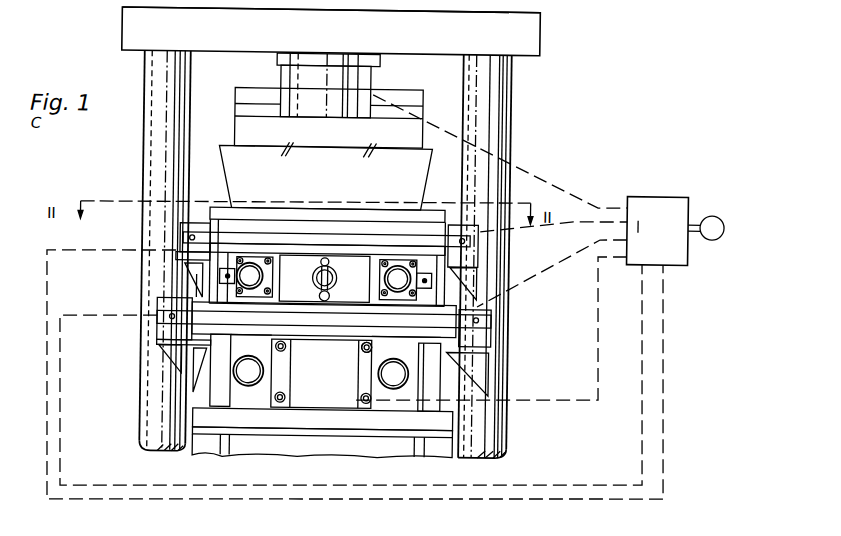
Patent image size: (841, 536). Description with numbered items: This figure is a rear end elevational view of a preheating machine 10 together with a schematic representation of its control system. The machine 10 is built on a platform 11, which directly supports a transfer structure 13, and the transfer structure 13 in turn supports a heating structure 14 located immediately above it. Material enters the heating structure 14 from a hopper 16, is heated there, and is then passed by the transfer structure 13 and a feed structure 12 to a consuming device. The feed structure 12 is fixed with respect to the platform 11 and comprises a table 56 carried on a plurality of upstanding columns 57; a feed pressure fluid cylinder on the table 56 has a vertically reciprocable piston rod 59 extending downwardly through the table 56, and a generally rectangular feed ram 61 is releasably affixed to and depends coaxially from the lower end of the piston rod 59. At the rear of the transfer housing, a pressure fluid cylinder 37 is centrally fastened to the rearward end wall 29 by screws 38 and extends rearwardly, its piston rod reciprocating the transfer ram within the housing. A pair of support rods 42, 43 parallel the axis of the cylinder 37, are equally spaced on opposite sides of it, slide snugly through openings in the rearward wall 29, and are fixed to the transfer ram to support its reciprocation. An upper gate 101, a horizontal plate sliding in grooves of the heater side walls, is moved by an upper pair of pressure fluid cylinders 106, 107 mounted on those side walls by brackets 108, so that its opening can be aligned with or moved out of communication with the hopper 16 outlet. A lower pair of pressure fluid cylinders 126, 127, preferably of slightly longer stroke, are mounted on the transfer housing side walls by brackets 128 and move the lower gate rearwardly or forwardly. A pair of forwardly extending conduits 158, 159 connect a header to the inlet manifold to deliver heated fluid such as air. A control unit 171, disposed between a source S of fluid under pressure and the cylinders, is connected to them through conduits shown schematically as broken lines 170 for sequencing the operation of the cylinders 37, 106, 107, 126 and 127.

The machine 10 is at (96, 165).
The platform 11 is at (393, 434).
The feed structure 12 is at (552, 34).
The transfer structure 13 is at (155, 405).
The heating structure 14 is at (150, 263).
The hopper 16 is at (326, 177).
The rearward end wall 29 is at (384, 404).
The pressure fluid cylinder 37 is at (321, 373).
The screws 38 is at (373, 348).
The support rod 42 is at (249, 378).
The support rod 43 is at (397, 382).
The table 56 is at (331, 31).
The upstanding columns 57 is at (500, 120).
The piston rod 59 is at (328, 85).
The feed ram 61 is at (328, 123).
The upper gate 101 is at (263, 239).
The upper pressure fluid cylinder 106 is at (183, 230).
The upper pressure fluid cylinder 107 is at (477, 253).
The brackets 108 is at (190, 270).
The lower pressure fluid cylinder 126 is at (164, 328).
The lower pressure fluid cylinder 127 is at (484, 331).
The brackets 128 is at (179, 355).
The conduit 158 is at (250, 264).
The conduit 159 is at (403, 264).
The broken lines 170 is at (560, 186).
The control unit 171 is at (657, 203).